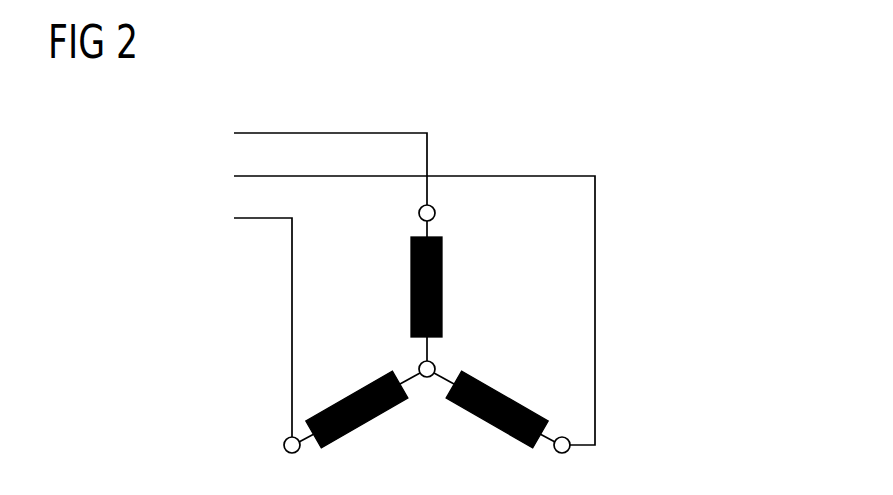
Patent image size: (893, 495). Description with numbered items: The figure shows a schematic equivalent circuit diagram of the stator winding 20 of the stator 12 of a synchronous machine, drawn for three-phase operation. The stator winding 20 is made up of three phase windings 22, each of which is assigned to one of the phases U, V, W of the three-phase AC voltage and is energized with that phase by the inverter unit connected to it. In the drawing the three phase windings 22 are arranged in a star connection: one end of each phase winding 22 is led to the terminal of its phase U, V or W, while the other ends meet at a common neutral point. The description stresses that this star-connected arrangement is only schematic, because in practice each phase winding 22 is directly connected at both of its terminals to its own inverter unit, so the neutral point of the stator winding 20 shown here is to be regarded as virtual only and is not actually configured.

The stator 12 is at (452, 102).
The stator winding 20 is at (440, 352).
The phase winding 22 is at (442, 287).